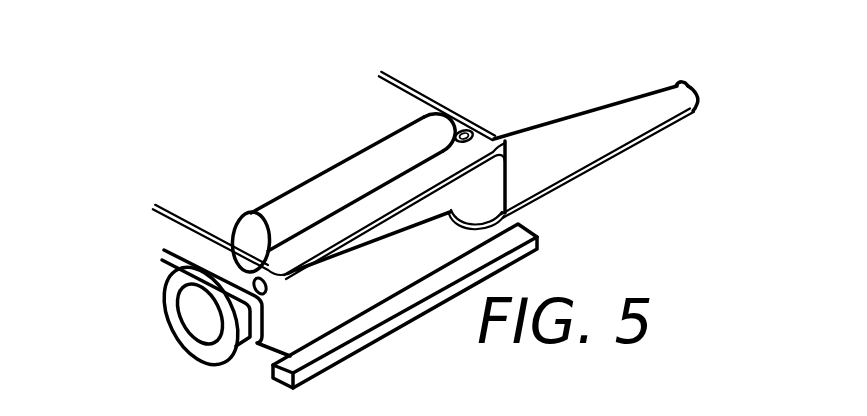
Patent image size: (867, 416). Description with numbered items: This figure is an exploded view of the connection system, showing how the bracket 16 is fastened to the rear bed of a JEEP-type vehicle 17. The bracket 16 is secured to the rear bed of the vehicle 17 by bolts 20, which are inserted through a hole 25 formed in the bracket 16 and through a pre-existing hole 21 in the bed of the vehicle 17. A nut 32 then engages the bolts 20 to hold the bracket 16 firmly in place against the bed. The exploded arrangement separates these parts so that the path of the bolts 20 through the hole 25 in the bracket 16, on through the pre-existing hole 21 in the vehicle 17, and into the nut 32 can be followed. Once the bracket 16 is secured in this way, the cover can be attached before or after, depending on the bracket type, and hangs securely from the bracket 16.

The bracket 16 is at (702, 98).
The vehicle 17 is at (293, 317).
The bolts 20 is at (481, 199).
The pre-existing hole 21 is at (255, 215).
The hole 25 is at (686, 82).
The nut 32 is at (467, 130).